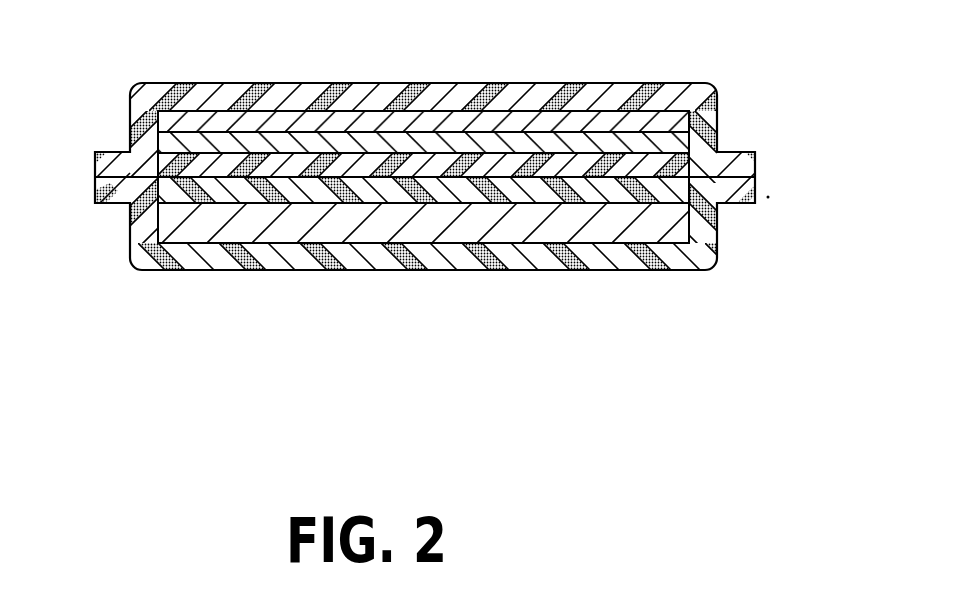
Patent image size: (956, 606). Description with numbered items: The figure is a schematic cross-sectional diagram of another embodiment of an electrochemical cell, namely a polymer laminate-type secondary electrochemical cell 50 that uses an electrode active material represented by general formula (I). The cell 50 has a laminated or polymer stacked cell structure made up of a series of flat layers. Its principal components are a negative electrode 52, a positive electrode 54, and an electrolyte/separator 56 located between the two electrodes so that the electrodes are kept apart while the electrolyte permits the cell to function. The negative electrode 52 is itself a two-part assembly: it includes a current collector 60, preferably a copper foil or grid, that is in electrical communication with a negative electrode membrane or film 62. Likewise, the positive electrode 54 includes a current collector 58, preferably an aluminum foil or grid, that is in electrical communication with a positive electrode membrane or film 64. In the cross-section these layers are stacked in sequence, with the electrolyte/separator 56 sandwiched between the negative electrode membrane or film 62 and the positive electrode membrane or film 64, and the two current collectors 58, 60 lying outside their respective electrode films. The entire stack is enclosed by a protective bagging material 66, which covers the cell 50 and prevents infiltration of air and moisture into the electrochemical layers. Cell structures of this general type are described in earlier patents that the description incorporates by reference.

The polymer laminate-type secondary electrochemical cell 50 is at (735, 78).
The negative electrode 52 is at (275, 252).
The positive electrode 54 is at (348, 120).
The electrolyte/separator 56 is at (655, 160).
The current collector 58 is at (172, 140).
The current collector 60 is at (678, 198).
The negative electrode membrane or film 62 is at (187, 232).
The positive electrode membrane or film 64 is at (463, 122).
The protective bagging material 66 is at (677, 262).